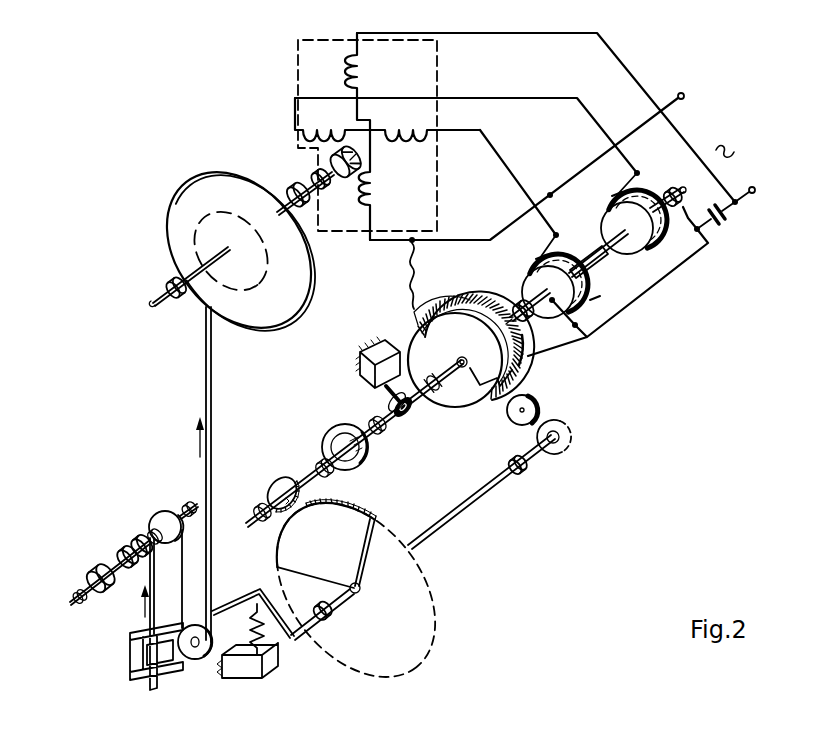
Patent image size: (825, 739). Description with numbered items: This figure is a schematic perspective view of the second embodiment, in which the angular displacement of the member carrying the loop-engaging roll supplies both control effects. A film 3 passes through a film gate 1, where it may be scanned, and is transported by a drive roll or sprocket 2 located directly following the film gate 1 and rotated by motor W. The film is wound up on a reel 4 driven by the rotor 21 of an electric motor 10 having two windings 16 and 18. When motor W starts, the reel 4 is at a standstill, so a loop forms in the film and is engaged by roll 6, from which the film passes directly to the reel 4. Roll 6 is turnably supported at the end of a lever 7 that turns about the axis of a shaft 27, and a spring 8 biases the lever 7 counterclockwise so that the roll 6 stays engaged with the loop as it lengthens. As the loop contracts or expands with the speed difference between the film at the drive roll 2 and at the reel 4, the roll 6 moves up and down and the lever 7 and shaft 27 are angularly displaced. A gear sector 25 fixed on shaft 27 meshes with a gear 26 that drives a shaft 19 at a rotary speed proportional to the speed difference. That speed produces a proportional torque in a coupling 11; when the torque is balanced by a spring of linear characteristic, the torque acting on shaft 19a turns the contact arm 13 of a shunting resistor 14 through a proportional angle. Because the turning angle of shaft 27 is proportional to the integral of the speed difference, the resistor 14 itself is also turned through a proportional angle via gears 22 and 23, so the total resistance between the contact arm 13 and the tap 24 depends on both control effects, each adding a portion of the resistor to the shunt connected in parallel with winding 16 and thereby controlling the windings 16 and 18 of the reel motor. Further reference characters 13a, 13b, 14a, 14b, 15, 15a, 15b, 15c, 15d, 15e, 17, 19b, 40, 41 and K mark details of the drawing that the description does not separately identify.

The film gate 1 is at (130, 668).
The drive roll 2 is at (156, 520).
The film 3 is at (205, 385).
The reel 4 is at (178, 230).
The loop-engaging roll 6 is at (196, 659).
The lever 7 is at (246, 598).
The spring 8 is at (266, 628).
The electric motor 10 is at (297, 60).
The coupling 11 is at (369, 456).
The contact arm 13 is at (411, 331).
The pawl 13a is at (471, 372).
The hub 13b is at (459, 357).
The shunting resistor 14 is at (533, 372).
The pinion 14a is at (518, 298).
The gear rim 14b is at (533, 348).
The shaft 15 is at (650, 265).
The drum 15a is at (535, 278).
The drum 15b is at (613, 222).
The coupling 15c is at (607, 260).
The collar 15d is at (684, 202).
The brush 15e is at (553, 231).
The winding 16 is at (307, 127).
The capacitor 17 is at (726, 222).
The winding 18 is at (362, 75).
The shaft 19 is at (303, 477).
The shaft 19a is at (394, 400).
The coupling 19b is at (410, 413).
The motor rotor 21 is at (298, 193).
The gear 22 is at (569, 433).
The gear 23 is at (541, 405).
The tap 24 is at (416, 310).
The gear sector 25 is at (335, 555).
The gear 26 is at (302, 495).
The shaft 27 is at (343, 607).
The terminal 40 is at (759, 190).
The terminal 41 is at (696, 98).
The coupling K is at (128, 548).
The motor W is at (92, 572).